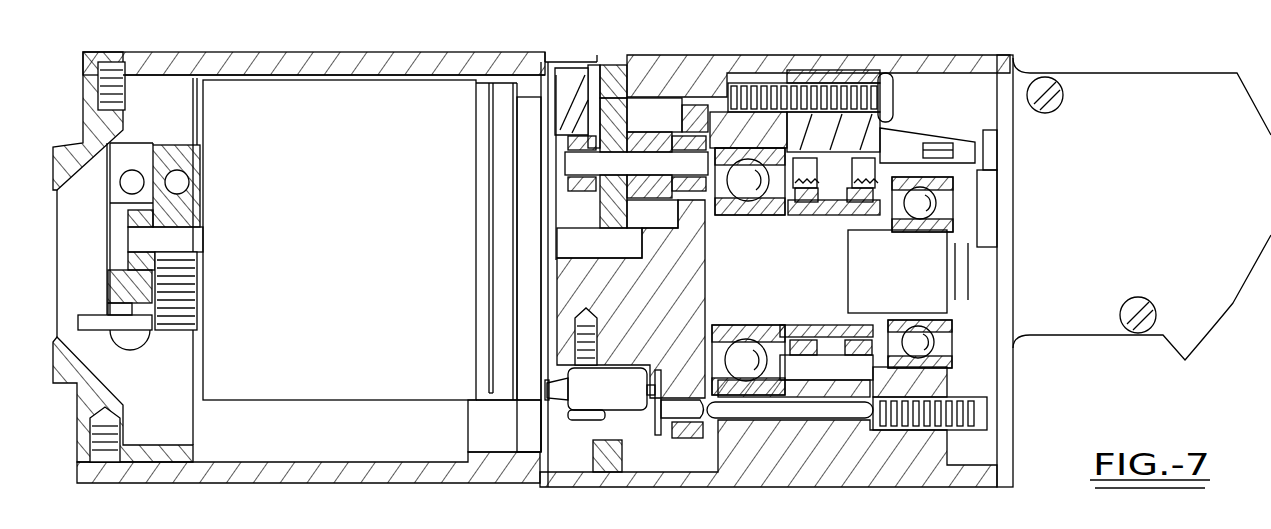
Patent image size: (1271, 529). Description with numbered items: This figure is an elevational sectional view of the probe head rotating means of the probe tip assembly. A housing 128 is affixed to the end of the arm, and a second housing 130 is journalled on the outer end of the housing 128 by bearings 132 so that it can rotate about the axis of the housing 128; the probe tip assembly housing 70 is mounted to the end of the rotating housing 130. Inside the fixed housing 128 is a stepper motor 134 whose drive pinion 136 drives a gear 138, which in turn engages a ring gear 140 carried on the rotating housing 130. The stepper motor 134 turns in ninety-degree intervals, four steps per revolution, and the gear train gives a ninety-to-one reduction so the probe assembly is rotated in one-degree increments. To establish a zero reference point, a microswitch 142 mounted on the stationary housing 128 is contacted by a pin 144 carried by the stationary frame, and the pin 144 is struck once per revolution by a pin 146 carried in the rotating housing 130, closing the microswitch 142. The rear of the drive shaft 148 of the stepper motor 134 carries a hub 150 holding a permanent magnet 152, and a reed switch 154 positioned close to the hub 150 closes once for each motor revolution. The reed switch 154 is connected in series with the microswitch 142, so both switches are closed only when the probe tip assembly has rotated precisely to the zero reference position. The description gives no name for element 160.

The probe tip assembly housing 70 is at (1050, 330).
The housing 128 is at (370, 62).
The second housing 130 is at (735, 62).
The bearings 132 is at (748, 202).
The stepper motor 134 is at (359, 214).
The drive pinion 136 is at (608, 257).
The gear 138 is at (622, 138).
The ring gear 140 is at (607, 62).
The microswitch 142 is at (590, 405).
The pin 144 is at (660, 412).
The pin 146 is at (807, 421).
The drive shaft 148 is at (204, 240).
The hub 150 is at (128, 218).
The permanent magnet 152 is at (200, 200).
The reed switch 154 is at (120, 192).
The brush assembly 160 is at (812, 162).